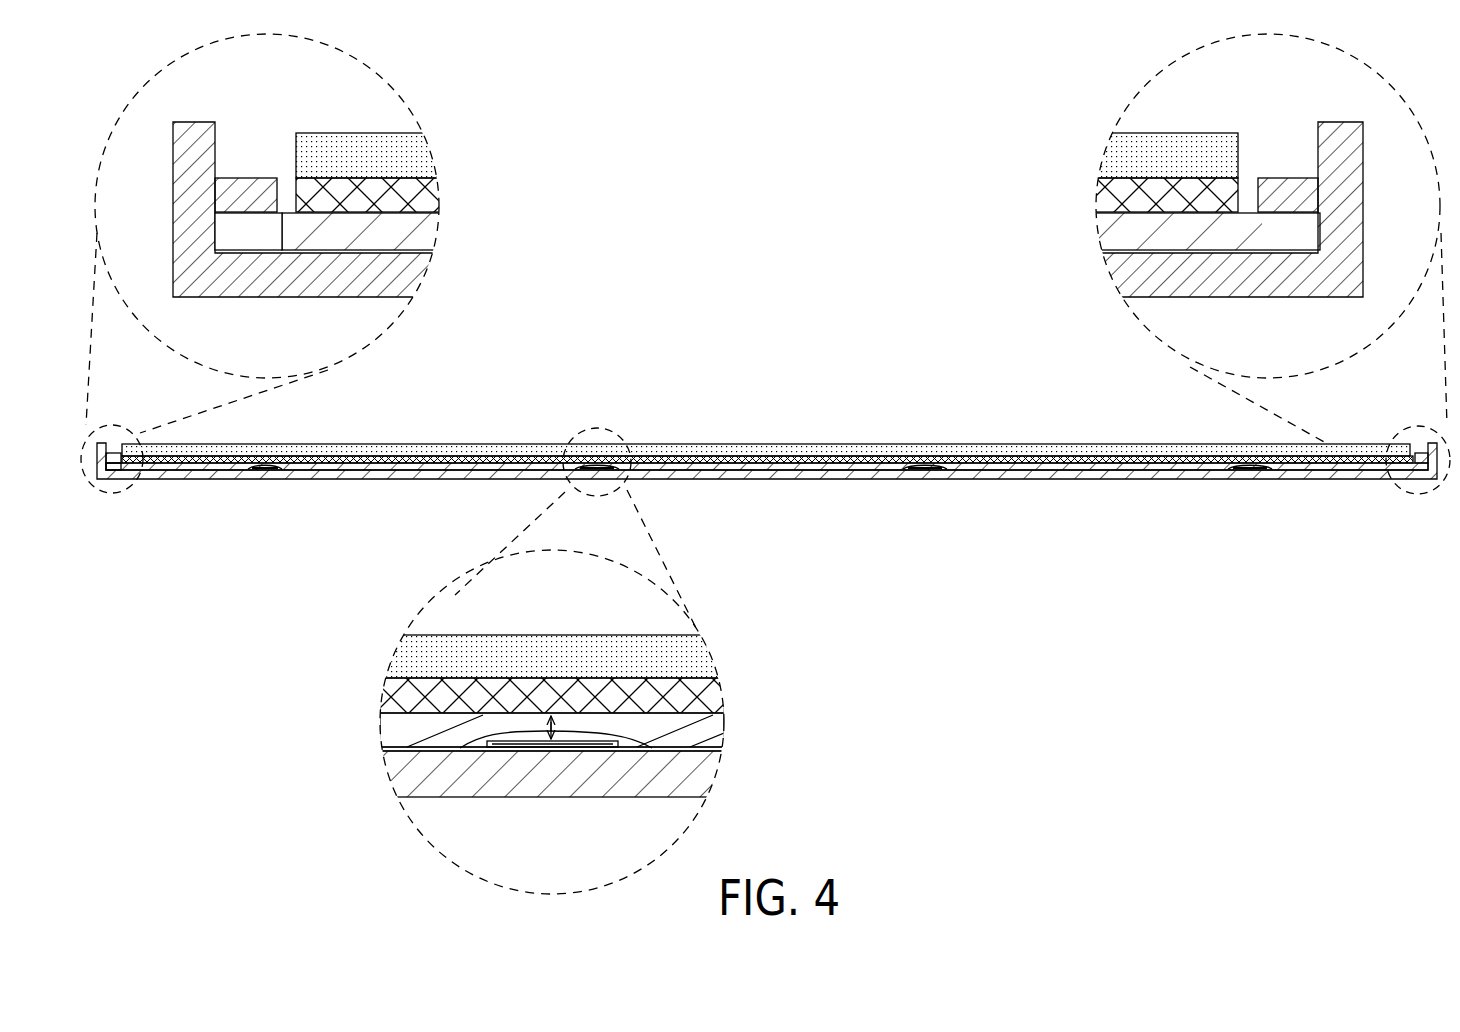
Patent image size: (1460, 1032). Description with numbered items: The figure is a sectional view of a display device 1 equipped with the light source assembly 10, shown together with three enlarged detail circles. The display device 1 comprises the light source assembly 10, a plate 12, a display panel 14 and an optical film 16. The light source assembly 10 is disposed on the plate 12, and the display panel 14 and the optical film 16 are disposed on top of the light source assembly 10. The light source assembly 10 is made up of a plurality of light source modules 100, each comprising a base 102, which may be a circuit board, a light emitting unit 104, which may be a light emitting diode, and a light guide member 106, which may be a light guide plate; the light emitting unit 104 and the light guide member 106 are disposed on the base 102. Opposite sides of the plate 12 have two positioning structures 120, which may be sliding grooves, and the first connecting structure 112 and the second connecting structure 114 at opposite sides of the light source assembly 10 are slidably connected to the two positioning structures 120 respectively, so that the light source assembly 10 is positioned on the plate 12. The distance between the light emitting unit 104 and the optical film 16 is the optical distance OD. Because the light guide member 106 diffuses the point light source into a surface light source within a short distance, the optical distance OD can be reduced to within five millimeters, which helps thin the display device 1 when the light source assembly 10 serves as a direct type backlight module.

The display device 1 is at (834, 333).
The light source assembly 10 is at (1072, 464).
The plate 12 is at (1158, 481).
The display panel 14 is at (1166, 449).
The optical film 16 is at (1116, 458).
The light source module 100 is at (552, 812).
The base 102 is at (477, 752).
The light emitting unit 104 is at (543, 748).
The light guide member 106 is at (465, 842).
The first connecting structure 112 is at (1270, 233).
The second connecting structure 114 is at (248, 233).
The positioning structure 120 is at (248, 177).
The optical distance OD is at (560, 727).